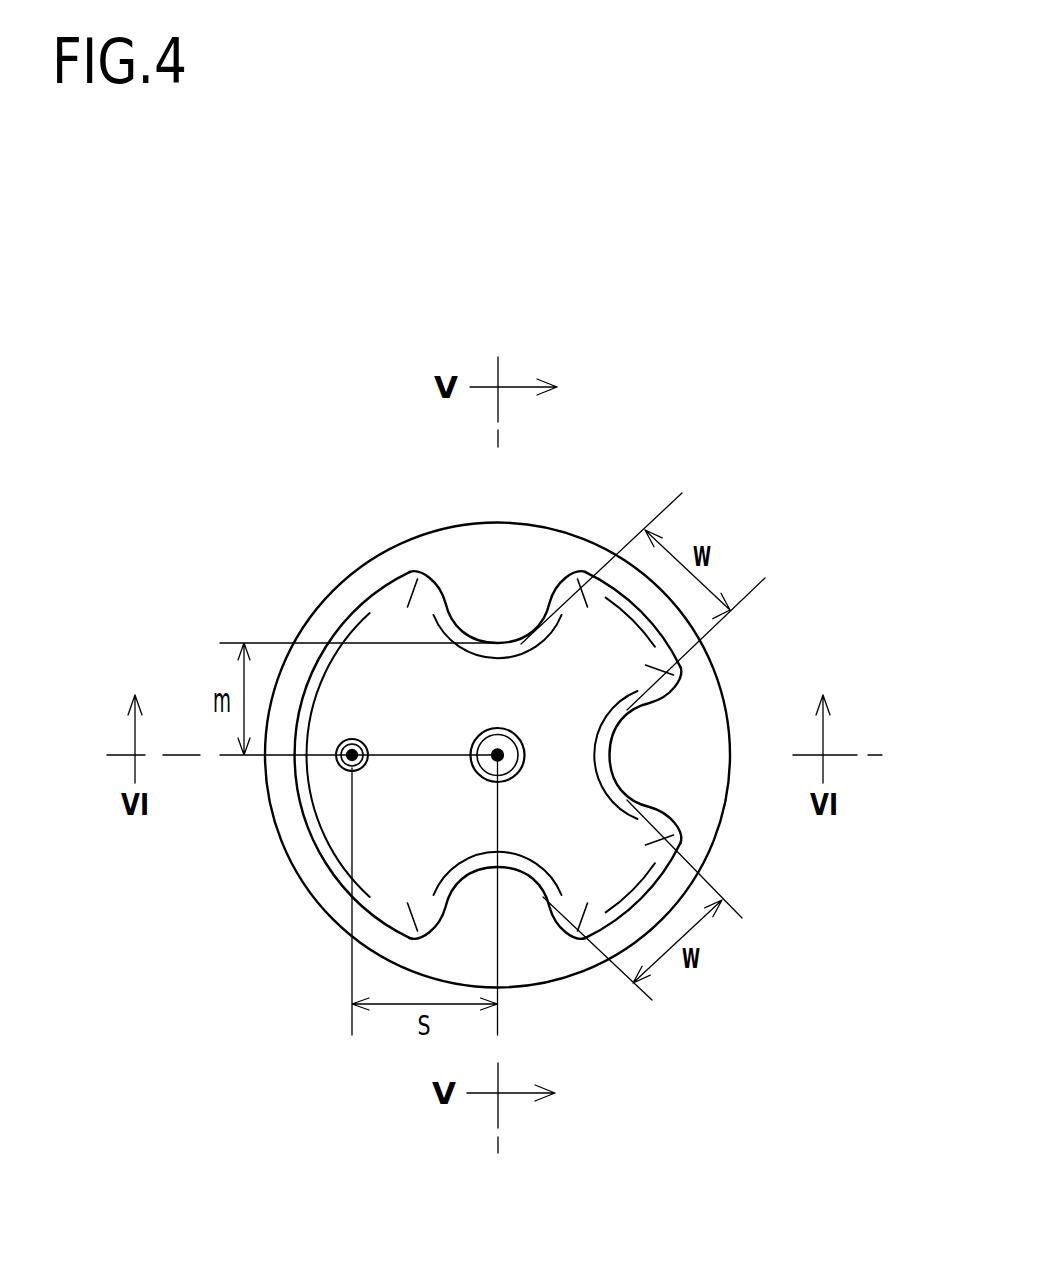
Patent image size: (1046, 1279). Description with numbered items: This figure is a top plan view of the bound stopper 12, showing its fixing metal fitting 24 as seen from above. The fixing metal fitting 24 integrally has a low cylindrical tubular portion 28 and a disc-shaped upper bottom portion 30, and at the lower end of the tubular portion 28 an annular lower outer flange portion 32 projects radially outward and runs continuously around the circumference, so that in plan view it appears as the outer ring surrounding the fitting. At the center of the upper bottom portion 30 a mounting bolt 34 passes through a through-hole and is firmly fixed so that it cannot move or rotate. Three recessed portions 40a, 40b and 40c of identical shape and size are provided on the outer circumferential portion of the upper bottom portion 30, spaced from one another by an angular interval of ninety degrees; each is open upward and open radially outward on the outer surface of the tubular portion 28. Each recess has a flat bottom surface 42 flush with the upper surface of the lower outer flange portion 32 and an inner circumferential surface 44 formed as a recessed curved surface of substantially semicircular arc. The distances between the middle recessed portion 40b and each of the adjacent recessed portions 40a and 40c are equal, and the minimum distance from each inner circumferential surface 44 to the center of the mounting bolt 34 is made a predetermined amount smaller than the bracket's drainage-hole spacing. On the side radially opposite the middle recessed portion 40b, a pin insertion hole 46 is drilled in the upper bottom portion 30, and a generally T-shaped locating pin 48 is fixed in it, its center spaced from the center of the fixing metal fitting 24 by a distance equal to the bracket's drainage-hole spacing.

The bound stopper 12 is at (390, 530).
The fixing metal fitting 24 is at (323, 598).
The tubular portion 28 is at (308, 812).
The upper bottom portion 30 is at (338, 848).
The lower outer flange portion 32 is at (337, 903).
The mounting bolt 34 is at (503, 747).
The recessed portion 40a is at (706, 368).
The recessed portion 40b is at (834, 590).
The recessed portion 40c is at (727, 1005).
The bottom surface 42 is at (513, 583).
The inner circumferential surface 44 is at (520, 637).
The pin insertion hole 46 is at (336, 753).
The locating pin 48 is at (340, 758).